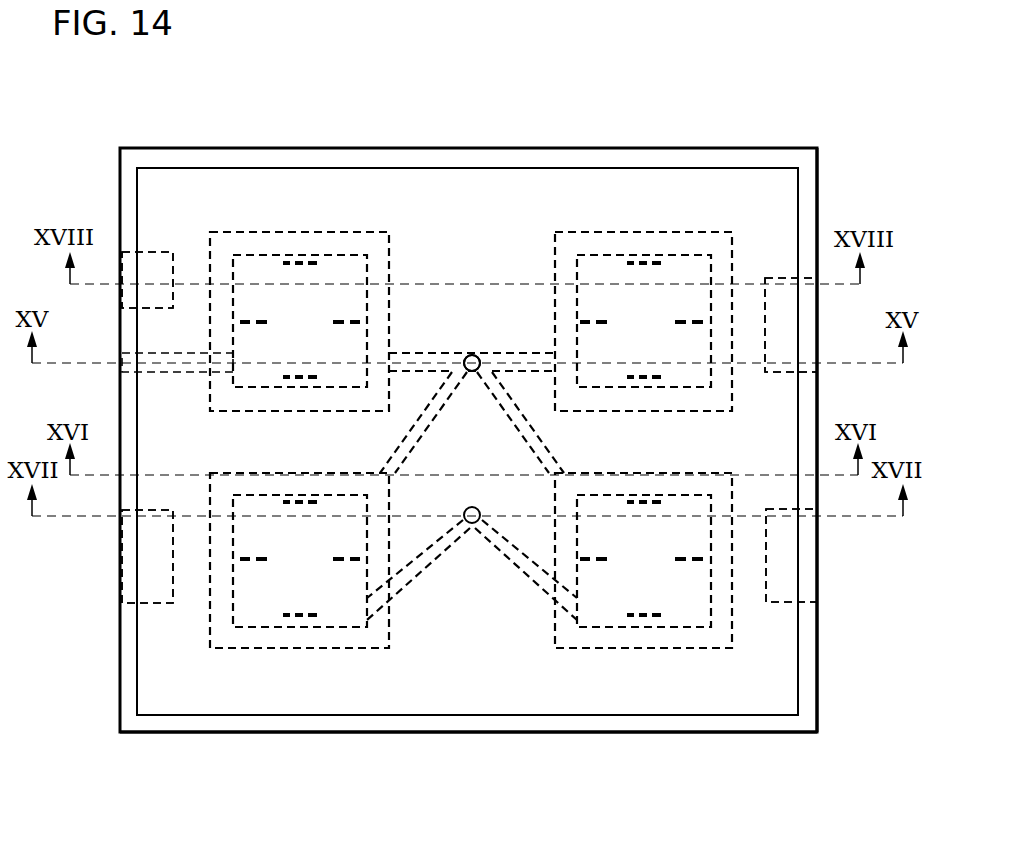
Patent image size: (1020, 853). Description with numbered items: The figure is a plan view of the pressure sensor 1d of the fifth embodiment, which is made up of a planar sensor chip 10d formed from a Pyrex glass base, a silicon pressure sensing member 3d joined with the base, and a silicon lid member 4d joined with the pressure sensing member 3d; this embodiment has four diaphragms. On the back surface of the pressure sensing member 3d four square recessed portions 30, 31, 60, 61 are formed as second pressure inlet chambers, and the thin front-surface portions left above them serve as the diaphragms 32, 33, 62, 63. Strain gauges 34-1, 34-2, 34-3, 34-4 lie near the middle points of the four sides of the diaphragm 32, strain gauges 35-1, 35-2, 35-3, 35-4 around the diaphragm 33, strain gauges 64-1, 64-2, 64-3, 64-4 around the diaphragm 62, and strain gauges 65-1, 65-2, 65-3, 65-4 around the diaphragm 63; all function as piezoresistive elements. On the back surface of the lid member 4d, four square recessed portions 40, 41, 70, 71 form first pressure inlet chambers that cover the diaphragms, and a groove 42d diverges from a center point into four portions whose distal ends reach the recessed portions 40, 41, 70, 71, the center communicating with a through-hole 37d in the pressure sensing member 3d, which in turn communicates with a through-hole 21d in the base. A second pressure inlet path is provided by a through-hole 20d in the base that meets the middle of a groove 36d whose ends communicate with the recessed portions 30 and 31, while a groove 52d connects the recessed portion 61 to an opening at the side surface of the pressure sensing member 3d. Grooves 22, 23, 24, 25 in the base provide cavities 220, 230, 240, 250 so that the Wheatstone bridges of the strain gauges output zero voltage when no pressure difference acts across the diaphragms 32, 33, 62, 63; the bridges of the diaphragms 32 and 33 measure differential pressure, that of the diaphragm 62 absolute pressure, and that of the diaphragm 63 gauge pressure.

The pressure sensor 1d is at (472, 74).
The sensor chip 10d is at (205, 150).
The pressure sensing member 3d is at (817, 182).
The lid member 4d is at (140, 735).
The diaphragm 62 is at (798, 168).
The diaphragm 63 is at (258, 260).
The recessed portion 71 is at (345, 232).
The recessed portion 61 is at (267, 255).
The strain gauge 65-1 is at (285, 263).
The strain gauge 65-2 is at (352, 320).
The strain gauge 65-3 is at (252, 323).
The strain gauge 65-4 is at (290, 380).
The recessed portion 60 is at (719, 265).
The recessed portion 70 is at (623, 232).
The strain gauge 64-1 is at (653, 260).
The strain gauge 64-2 is at (690, 320).
The strain gauge 64-3 is at (588, 318).
The strain gauge 64-4 is at (640, 377).
The diaphragm 33 is at (211, 622).
The recessed portion 41 is at (260, 650).
The recessed portion 31 is at (243, 628).
The strain gauge 35-1 is at (300, 500).
The strain gauge 35-2 is at (357, 563).
The strain gauge 35-3 is at (253, 562).
The strain gauge 35-4 is at (302, 617).
The recessed portion 30 is at (717, 619).
The recessed portion 40 is at (690, 648).
The diaphragm 32 is at (711, 627).
The strain gauge 34-1 is at (650, 498).
The strain gauge 34-2 is at (690, 560).
The strain gauge 34-3 is at (600, 562).
The strain gauge 34-4 is at (641, 618).
The groove 25 is at (150, 252).
The cavity 250 is at (152, 297).
The groove 52d is at (163, 372).
The cavity 240 is at (787, 314).
The groove 24 is at (775, 372).
The cavity 230 is at (157, 567).
The groove 23 is at (147, 604).
The cavity 220 is at (785, 562).
The groove 22 is at (778, 603).
The through-hole 21d is at (471, 355).
The through-hole 37d is at (472, 363).
The groove 42d is at (428, 410).
The through-hole 20d is at (472, 527).
The groove 36d is at (425, 568).